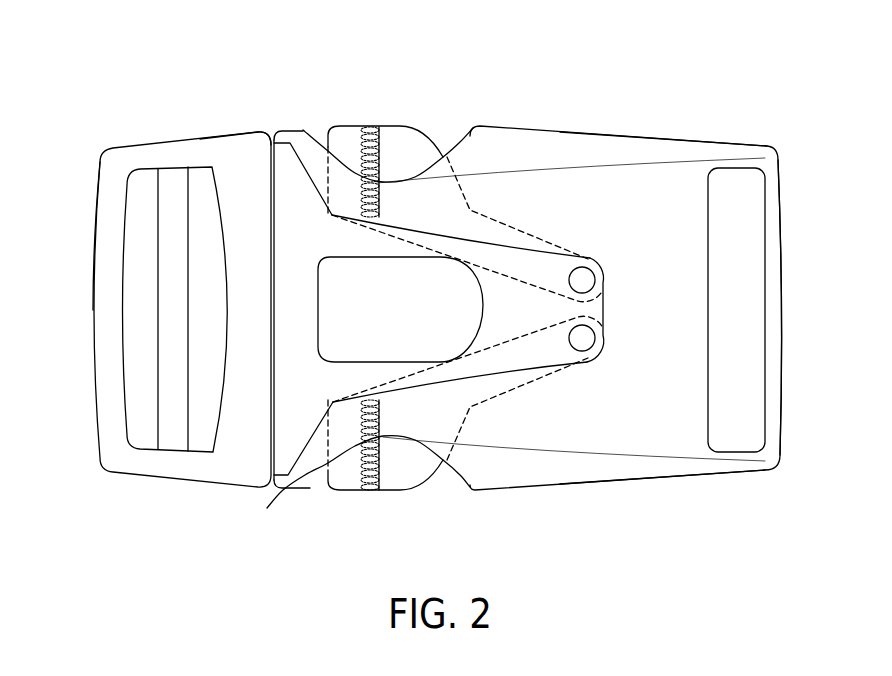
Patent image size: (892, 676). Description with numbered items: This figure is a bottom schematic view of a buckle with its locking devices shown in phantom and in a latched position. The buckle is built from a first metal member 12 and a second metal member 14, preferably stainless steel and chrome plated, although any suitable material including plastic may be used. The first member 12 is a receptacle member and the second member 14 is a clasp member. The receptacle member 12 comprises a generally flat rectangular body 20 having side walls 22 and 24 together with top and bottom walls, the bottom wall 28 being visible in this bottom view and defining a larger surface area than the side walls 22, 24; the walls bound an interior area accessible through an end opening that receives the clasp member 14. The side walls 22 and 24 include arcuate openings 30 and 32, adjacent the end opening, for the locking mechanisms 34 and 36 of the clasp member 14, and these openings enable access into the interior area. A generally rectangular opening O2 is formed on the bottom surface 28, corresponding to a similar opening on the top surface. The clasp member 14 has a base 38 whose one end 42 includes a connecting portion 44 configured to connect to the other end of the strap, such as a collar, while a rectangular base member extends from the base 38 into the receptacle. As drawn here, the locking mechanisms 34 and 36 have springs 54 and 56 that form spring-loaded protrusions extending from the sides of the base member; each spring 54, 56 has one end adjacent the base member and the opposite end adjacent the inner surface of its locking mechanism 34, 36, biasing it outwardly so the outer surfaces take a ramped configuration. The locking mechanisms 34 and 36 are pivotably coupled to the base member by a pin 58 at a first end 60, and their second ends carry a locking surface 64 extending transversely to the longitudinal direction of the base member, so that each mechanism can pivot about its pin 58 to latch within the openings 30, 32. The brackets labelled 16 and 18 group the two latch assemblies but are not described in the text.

The first metal member 12 is at (550, 127).
The second metal member 14 is at (190, 138).
The first latch assembly 16 is at (397, 73).
The second latch assembly 18 is at (272, 548).
The body 20 is at (673, 167).
The side wall 22 is at (620, 488).
The side wall 24 is at (622, 133).
The bottom wall 28 is at (695, 172).
The opening 30 is at (450, 145).
The opening 32 is at (315, 478).
The locking mechanism 34 is at (400, 125).
The locking mechanism 36 is at (773, 263).
The base 38 is at (245, 132).
The end 42 is at (95, 240).
The connecting portion 44 is at (170, 302).
The spring 54 is at (368, 493).
The spring 56 is at (361, 143).
The pin 58 is at (580, 278).
The first end 60 is at (356, 124).
The locking surface 64 is at (328, 130).
The rectangular opening O2 is at (385, 257).